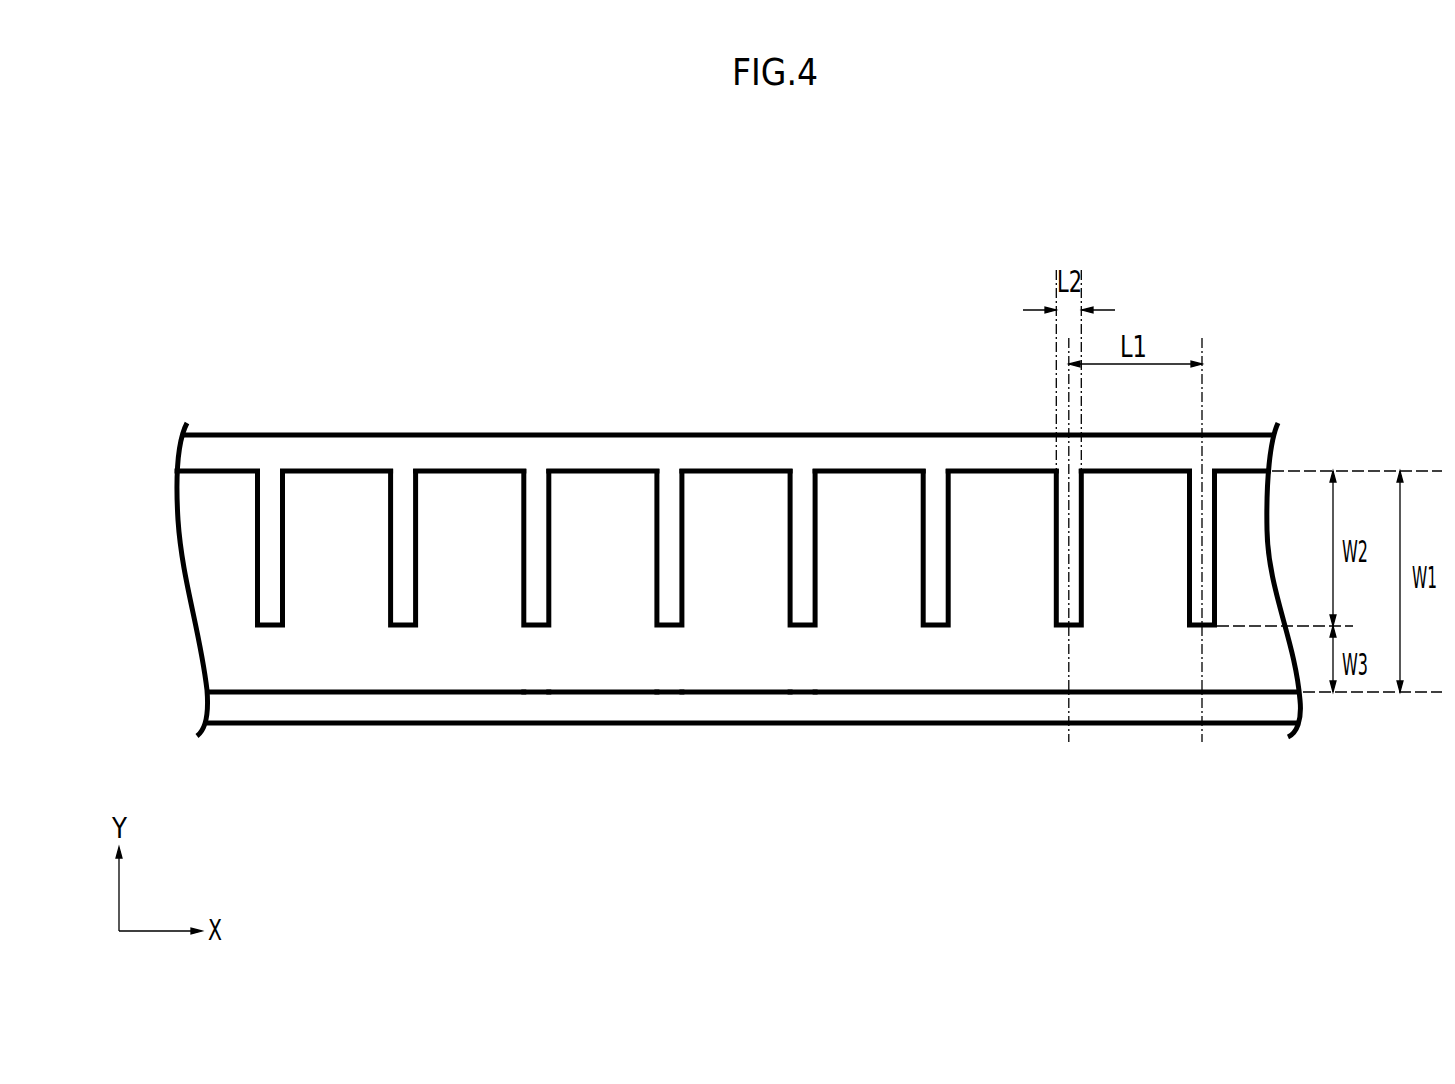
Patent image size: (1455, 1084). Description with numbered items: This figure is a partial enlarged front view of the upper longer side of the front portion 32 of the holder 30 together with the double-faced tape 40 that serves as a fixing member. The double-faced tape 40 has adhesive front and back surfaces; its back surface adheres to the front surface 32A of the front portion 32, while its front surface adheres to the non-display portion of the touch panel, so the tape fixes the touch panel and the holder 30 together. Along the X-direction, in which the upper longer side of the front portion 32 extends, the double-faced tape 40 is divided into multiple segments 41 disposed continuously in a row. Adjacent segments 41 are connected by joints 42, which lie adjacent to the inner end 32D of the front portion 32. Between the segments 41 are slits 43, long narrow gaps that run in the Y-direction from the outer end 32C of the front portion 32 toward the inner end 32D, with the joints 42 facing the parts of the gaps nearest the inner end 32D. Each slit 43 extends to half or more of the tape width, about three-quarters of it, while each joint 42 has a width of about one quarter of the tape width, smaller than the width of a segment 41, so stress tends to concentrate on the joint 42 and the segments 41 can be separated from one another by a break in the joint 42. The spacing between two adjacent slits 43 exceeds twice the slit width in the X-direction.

The holder 30 is at (232, 434).
The front portion 32 is at (197, 457).
The front surface 32A is at (318, 455).
The outer end 32C is at (407, 438).
The inner end 32D is at (410, 725).
The double-faced tape 40 is at (220, 635).
The segment 41 is at (602, 568).
The joint 42 is at (535, 663).
The slit 43 is at (546, 528).